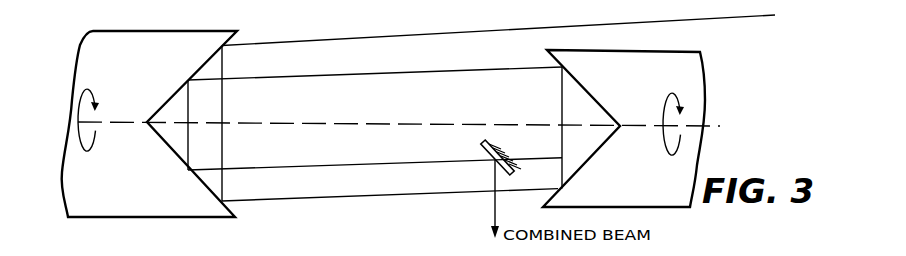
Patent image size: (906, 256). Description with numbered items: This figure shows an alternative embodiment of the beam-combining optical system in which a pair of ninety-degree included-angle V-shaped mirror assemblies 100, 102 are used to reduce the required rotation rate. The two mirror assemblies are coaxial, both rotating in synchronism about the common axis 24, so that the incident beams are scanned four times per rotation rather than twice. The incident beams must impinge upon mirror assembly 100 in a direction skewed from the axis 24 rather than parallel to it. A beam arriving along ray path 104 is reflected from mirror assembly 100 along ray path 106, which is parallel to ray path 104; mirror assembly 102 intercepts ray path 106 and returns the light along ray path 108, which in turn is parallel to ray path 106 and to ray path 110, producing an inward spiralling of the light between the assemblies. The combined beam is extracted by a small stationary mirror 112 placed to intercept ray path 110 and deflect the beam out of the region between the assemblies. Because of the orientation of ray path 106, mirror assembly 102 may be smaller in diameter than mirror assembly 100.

The axis 24 is at (470, 120).
The mirror assembly 100 is at (172, 112).
The mirror assembly 102 is at (580, 102).
The ray path 104 is at (418, 33).
The ray path 106 is at (372, 197).
The ray path 108 is at (407, 72).
The ray path 110 is at (377, 162).
The stationary mirror 112 is at (506, 175).